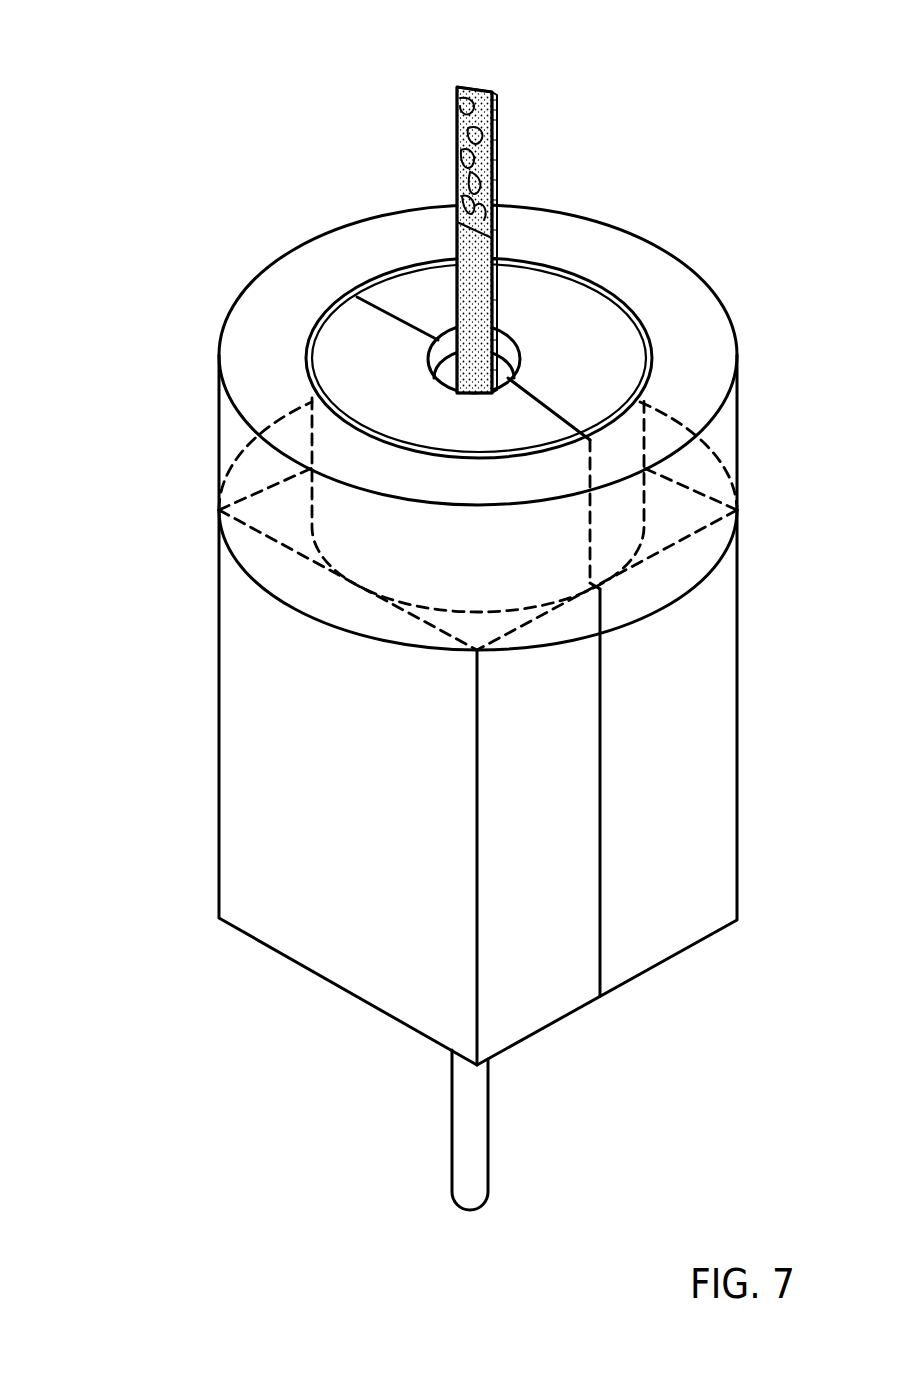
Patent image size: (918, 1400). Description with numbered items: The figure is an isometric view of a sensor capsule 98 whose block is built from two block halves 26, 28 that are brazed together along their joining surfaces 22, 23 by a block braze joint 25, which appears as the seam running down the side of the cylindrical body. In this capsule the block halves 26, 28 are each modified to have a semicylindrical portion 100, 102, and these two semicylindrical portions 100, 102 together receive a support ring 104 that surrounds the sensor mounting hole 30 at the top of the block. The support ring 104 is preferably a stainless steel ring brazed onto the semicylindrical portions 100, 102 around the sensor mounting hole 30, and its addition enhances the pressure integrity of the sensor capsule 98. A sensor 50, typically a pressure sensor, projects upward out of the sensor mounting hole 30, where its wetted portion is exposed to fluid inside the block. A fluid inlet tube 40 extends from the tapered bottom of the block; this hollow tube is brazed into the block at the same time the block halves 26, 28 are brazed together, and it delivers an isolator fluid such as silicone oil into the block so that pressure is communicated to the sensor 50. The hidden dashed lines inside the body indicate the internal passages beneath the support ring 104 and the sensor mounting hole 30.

The sensor capsule 98 is at (170, 127).
The sensor 50 is at (470, 277).
The sensor mounting hole 30 is at (434, 368).
The semicylindrical portion 100 is at (563, 322).
The semicylindrical portion 102 is at (397, 393).
The support ring 104 is at (712, 285).
The joining surface 22 is at (509, 735).
The joining surface 23 is at (509, 735).
The block braze joint 25 is at (593, 898).
The block half 26 is at (678, 778).
The block half 28 is at (547, 835).
The fluid inlet tube 40 is at (452, 1117).